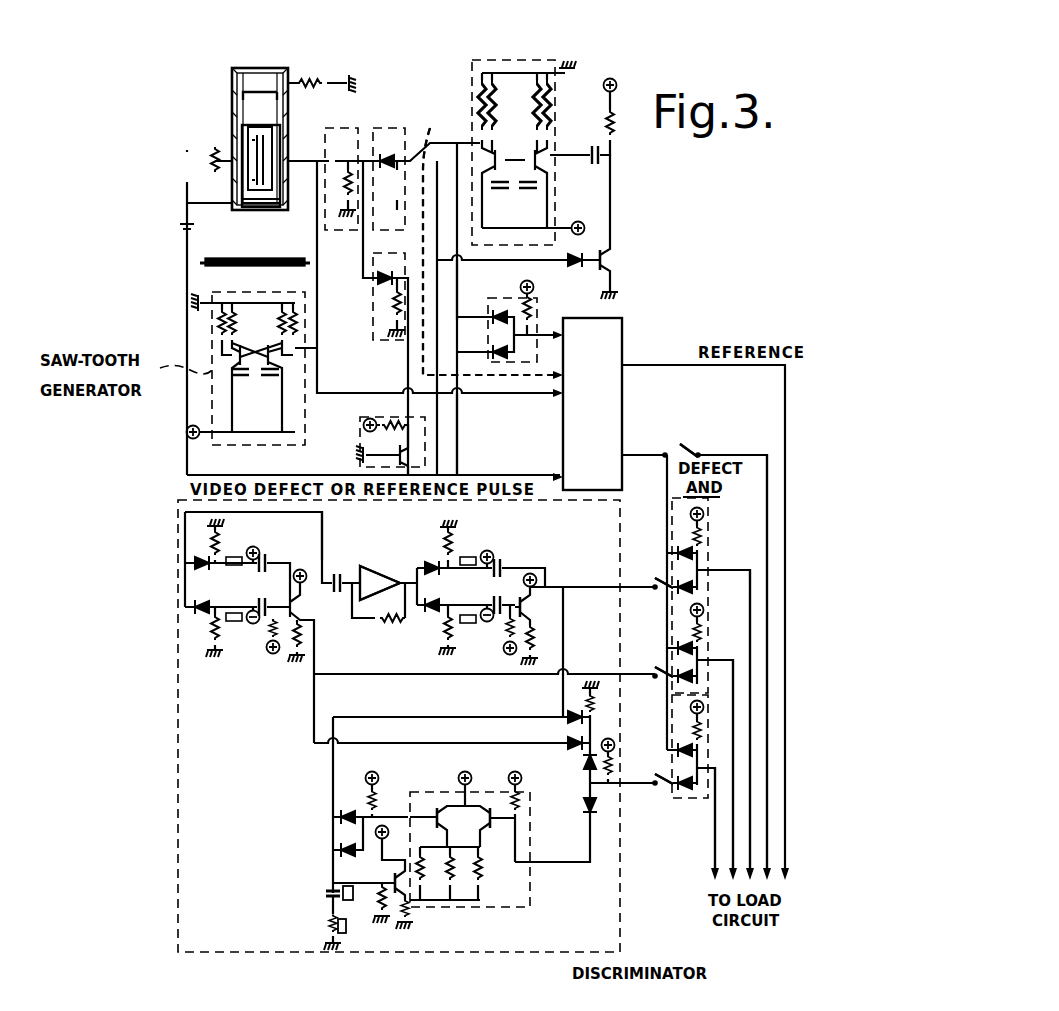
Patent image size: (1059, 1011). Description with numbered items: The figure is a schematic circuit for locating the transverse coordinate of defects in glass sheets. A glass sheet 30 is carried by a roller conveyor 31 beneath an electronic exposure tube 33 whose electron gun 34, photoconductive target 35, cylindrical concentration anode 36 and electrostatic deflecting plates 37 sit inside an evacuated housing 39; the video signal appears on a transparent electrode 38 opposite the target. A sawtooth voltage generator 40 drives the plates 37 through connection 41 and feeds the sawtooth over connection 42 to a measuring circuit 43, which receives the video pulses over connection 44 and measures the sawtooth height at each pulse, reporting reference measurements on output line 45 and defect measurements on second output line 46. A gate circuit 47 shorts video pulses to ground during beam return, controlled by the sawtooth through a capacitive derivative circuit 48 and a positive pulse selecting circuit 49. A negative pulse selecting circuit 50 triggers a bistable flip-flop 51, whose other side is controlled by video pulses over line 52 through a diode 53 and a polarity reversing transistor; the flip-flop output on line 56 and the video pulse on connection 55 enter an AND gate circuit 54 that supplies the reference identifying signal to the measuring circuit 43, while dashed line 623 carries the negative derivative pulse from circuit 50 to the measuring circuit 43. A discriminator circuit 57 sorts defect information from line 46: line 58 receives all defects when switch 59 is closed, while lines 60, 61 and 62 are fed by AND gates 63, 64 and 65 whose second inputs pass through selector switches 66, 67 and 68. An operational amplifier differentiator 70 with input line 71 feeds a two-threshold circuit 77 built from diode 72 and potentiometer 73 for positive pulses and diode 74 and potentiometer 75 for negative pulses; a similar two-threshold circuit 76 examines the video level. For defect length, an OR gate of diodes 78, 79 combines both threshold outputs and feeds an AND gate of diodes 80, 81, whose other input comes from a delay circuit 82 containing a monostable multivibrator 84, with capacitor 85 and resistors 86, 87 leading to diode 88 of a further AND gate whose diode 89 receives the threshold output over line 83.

The glass sheet 30 is at (228, 258).
The roller conveyor 31 is at (280, 258).
The electronic exposure tube 33 is at (265, 66).
The electron gun 34 is at (285, 98).
The photoconductive target 35 is at (212, 174).
The cylindrical concentration anode 36 is at (242, 150).
The electrostatic deflecting plates 37 is at (245, 135).
The transparent electrode 38 is at (230, 219).
The housing 39 is at (236, 70).
The sawtooth voltage generator 40 is at (242, 385).
The connection 41 is at (318, 242).
The connection 42 is at (327, 393).
The measuring circuit 43 is at (622, 318).
The connection 44 is at (300, 486).
The output line 45 is at (642, 365).
The second output line 46 is at (650, 453).
The gate circuit 47 is at (362, 428).
The capacitive derivative circuit 48 is at (349, 76).
The positive pulse selecting circuit 49 is at (373, 305).
The negative pulse selecting circuit 50 is at (389, 128).
The bistable flip-flop 51 is at (510, 60).
The line 52 is at (580, 258).
The diode 53 is at (615, 250).
The AND gate circuit 54 is at (537, 312).
The connection 55 is at (457, 427).
The line 56 is at (457, 278).
The discriminator circuit 57 is at (620, 912).
The line 58 is at (733, 455).
The switch 59 is at (684, 444).
The line 60 is at (712, 570).
The line 61 is at (710, 660).
The line 62 is at (712, 800).
The AND gate 63 is at (704, 516).
The AND gate 64 is at (704, 608).
The AND gate 65 is at (672, 716).
The selector switch 66 is at (656, 578).
The selector switch 67 is at (656, 668).
The selector switch 68 is at (656, 776).
The operational amplifier differentiator 70 is at (371, 568).
The input line 71 is at (322, 522).
The diode 72 is at (430, 562).
The potentiometer 73 is at (462, 544).
The diode 74 is at (430, 612).
The potentiometer 75 is at (464, 624).
The two-threshold circuit 76 is at (247, 648).
The two-threshold circuit 77 is at (521, 568).
The diode 78 is at (568, 716).
The diode 79 is at (568, 741).
The diode 80 is at (583, 766).
The diode 81 is at (583, 808).
The delay circuit 82 is at (331, 855).
The line 83 is at (437, 717).
The monostable multivibrator 84 is at (530, 838).
The capacitor 85 is at (328, 893).
The resistor 86 is at (333, 884).
The resistor 87 is at (326, 924).
The diode 88 is at (343, 846).
The diode 89 is at (352, 815).
The line 623 is at (489, 242).